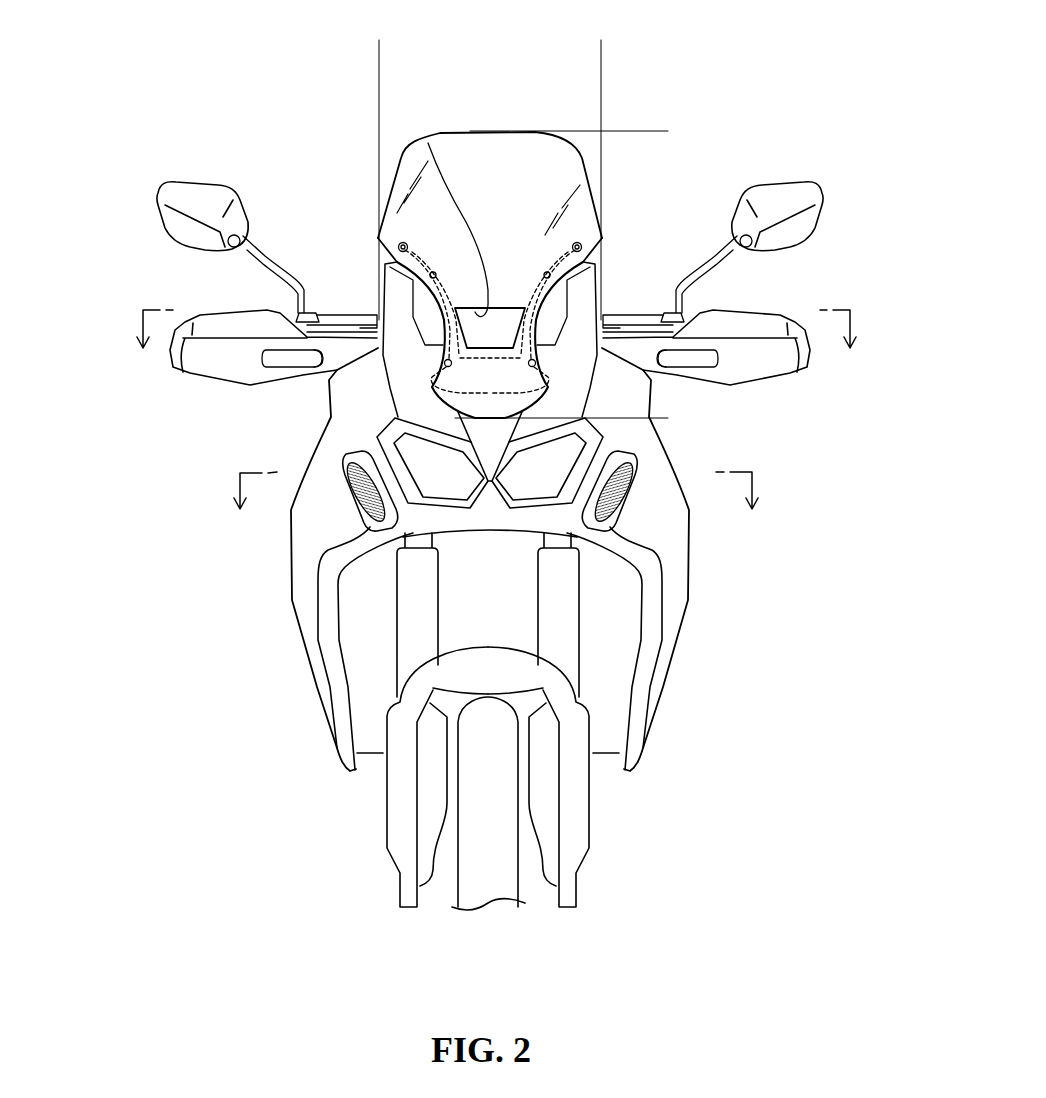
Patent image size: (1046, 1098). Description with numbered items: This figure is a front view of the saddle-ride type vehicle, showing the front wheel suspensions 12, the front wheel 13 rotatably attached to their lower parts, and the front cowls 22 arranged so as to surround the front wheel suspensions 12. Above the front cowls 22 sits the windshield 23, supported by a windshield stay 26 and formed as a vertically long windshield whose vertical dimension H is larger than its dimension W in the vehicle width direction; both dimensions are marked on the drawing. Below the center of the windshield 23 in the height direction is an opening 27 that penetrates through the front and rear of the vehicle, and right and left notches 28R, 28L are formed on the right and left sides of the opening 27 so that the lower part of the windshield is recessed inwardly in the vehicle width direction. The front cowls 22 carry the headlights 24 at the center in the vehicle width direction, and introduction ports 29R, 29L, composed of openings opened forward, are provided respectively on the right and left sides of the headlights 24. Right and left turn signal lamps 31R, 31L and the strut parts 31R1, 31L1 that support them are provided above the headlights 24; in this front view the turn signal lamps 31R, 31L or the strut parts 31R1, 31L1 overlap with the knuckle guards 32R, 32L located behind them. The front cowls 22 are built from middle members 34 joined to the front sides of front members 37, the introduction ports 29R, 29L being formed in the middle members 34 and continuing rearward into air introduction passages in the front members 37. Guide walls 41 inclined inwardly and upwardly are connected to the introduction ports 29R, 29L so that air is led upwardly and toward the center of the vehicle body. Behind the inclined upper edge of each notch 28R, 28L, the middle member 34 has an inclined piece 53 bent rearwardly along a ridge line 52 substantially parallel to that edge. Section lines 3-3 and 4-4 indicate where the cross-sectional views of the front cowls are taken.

The front wheel suspension 12 is at (562, 610).
The front wheel 13 is at (488, 887).
The front cowl 22 is at (302, 505).
The windshield 23 is at (495, 148).
The headlight 24 is at (447, 488).
The windshield stay 26 is at (388, 236).
The opening 27 is at (428, 143).
The right notch 28R is at (392, 297).
The left notch 28L is at (545, 320).
The right introduction port 29R is at (358, 505).
The left introduction port 29L is at (622, 505).
The right turn signal lamp 31R is at (300, 360).
The right strut part 31R1 is at (342, 364).
The left turn signal lamp 31L is at (680, 360).
The left strut part 31L1 is at (638, 364).
The right knuckle guard 32R is at (213, 362).
The left knuckle guard 32L is at (767, 362).
The middle member 34 is at (667, 502).
The front member 37 is at (597, 445).
The guide wall 41 is at (624, 527).
The ridge line 52 is at (590, 272).
The inclined piece 53 is at (583, 250).
The vertical dimension H is at (663, 133).
The vehicle width direction dimension W is at (379, 47).
The section line 3- 3 is at (494, 485).
The section line 4- 4 is at (495, 308).